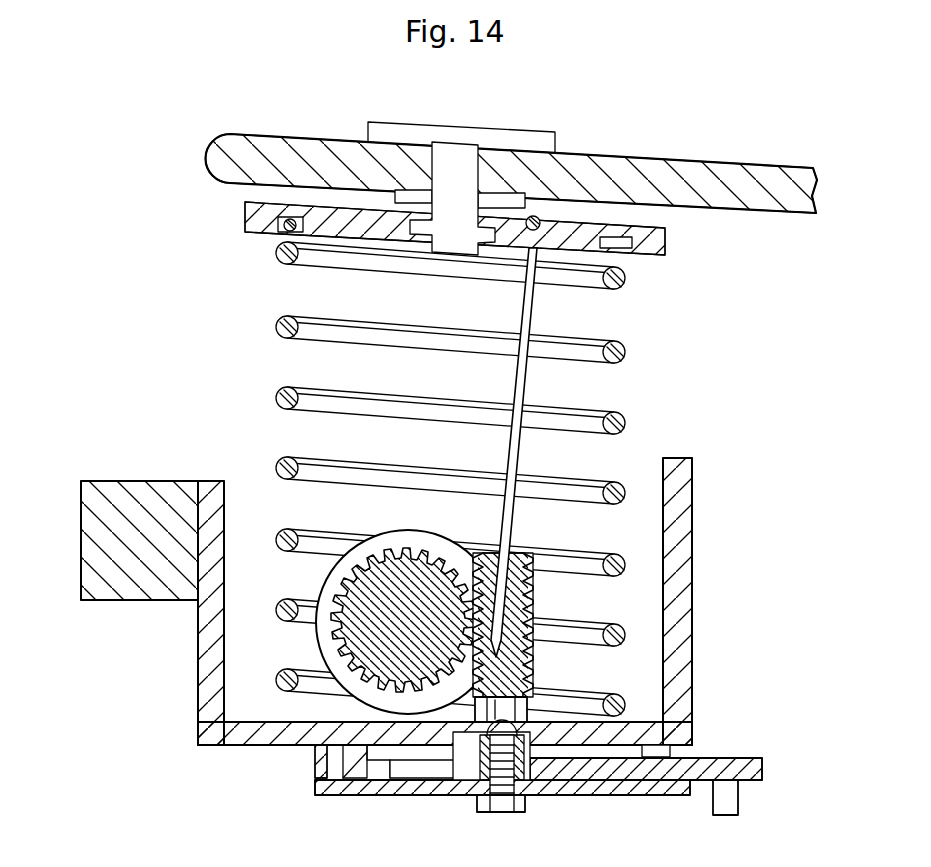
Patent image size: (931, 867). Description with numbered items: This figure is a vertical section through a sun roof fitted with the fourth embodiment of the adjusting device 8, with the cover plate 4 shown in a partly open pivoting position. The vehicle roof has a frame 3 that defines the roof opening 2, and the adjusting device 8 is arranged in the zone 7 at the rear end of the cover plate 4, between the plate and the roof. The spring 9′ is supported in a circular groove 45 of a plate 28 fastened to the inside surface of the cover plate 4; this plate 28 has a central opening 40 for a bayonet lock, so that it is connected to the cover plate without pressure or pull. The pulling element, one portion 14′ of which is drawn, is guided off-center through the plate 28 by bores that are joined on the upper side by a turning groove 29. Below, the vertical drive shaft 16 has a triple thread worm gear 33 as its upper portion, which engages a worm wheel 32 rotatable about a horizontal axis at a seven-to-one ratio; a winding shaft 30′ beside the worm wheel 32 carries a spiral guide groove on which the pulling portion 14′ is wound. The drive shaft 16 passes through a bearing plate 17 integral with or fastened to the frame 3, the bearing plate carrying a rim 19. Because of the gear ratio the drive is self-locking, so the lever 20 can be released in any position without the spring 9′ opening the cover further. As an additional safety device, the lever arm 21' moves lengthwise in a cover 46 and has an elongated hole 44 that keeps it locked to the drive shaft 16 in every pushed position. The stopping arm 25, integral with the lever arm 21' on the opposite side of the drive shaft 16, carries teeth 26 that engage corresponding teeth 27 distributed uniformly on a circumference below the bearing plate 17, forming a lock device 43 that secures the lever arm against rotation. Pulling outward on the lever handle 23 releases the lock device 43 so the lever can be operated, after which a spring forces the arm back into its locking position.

The roof opening 2 is at (243, 458).
The frame 3 is at (138, 497).
The cover plate 4 is at (695, 175).
The zone of the rear end of the cover plate 7 is at (345, 120).
The adjusting device 8 is at (737, 354).
The spring 9′ is at (628, 352).
The pulling element portion 14′ is at (529, 382).
The drive shaft 16 is at (524, 693).
The bearing plate 17 is at (271, 735).
The rim 19 is at (684, 560).
The lever 20 is at (814, 770).
The lever arm 21' is at (646, 804).
The lever handle 23 is at (730, 805).
The stopping arm 25 is at (377, 768).
The teeth 26 is at (348, 790).
The teeth 27 is at (669, 745).
The plate 28 is at (652, 247).
The turning groove 29 is at (538, 220).
The winding shaft 30′ is at (420, 537).
The worm wheel 32 is at (380, 587).
The worm gear 33 is at (534, 608).
The central opening 40 is at (437, 232).
The lock device 43 is at (313, 792).
The elongated hole 44 is at (427, 770).
The circular groove 45 is at (276, 228).
The cover 46 is at (572, 788).